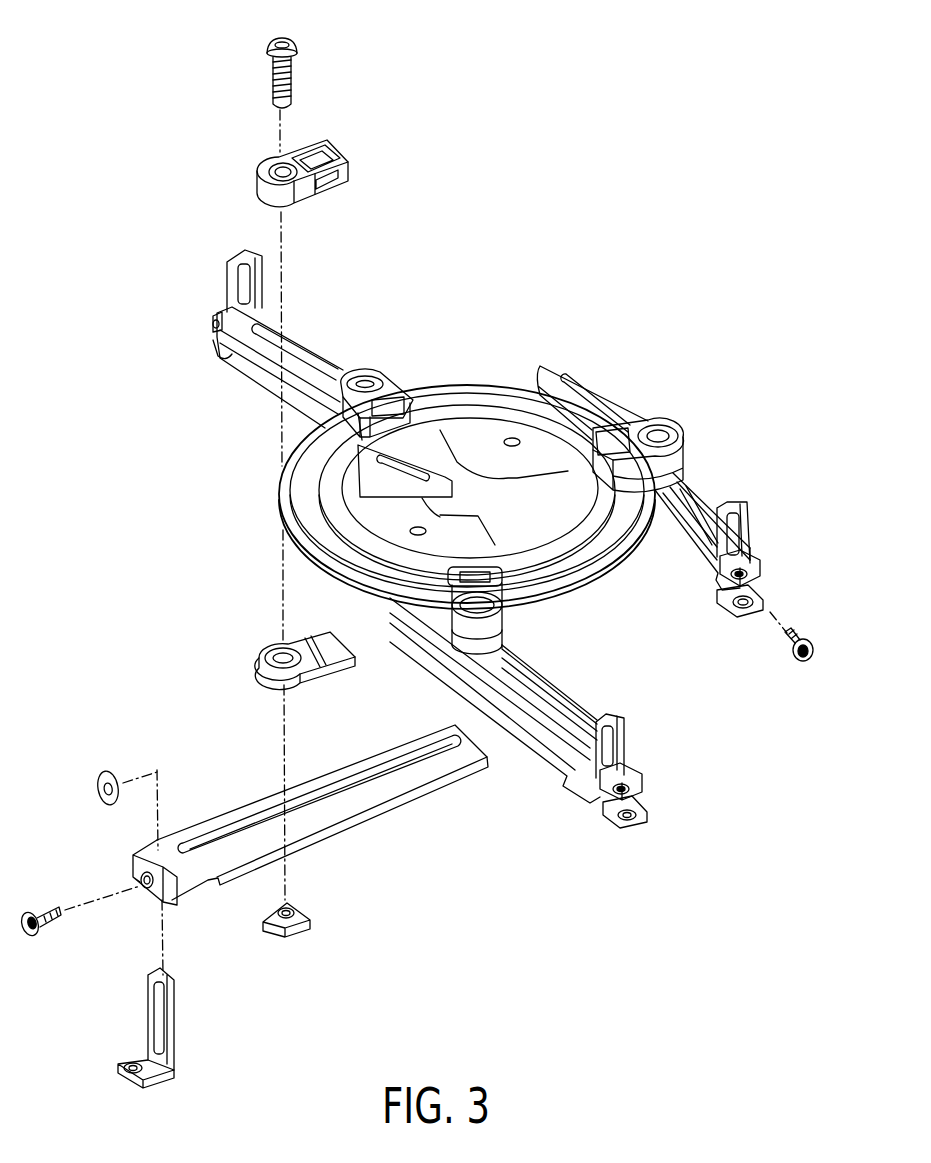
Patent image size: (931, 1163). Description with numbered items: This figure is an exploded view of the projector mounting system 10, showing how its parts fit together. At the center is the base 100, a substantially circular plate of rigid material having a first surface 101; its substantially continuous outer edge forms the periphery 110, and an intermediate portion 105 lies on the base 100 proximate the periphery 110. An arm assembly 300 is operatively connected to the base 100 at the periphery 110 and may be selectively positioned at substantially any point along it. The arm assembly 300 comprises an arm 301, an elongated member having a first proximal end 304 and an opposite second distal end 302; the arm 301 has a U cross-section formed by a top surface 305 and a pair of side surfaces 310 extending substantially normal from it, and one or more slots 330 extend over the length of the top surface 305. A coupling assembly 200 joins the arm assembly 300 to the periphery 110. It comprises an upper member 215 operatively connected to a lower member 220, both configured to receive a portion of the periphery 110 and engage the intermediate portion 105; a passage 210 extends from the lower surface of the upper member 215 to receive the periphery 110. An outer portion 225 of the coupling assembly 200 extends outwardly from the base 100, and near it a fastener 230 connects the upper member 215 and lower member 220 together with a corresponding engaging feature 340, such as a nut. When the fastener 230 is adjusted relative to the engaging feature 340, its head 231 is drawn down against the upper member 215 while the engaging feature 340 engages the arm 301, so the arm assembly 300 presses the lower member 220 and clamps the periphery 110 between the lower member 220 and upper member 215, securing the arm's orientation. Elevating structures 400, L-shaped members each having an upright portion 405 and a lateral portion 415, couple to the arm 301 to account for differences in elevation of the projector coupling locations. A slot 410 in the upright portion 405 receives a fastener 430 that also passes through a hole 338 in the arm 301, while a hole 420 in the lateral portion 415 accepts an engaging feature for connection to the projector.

The mounting system 10 is at (490, 286).
The base 100 is at (463, 440).
The first surface 101 is at (612, 547).
The intermediate portion 105 is at (627, 527).
The periphery 110 is at (508, 393).
The coupling assembly 200 is at (398, 372).
The passage 210 is at (317, 188).
The upper member 215 is at (303, 157).
The lower member 220 is at (315, 642).
The outer portion 225 is at (487, 632).
The fastener 230 is at (282, 40).
The head 231 is at (296, 57).
The arm assembly 300 is at (572, 674).
The arm 301 is at (377, 807).
The second distal end 302 is at (578, 787).
The first proximal end 304 is at (467, 768).
The top surface 305 is at (263, 293).
The side surfaces 310 is at (240, 358).
The slots 330 is at (232, 834).
The hole 338 is at (147, 845).
The engaging feature 340 is at (295, 930).
The elevating structures 400 is at (173, 1003).
The upright portion 405 is at (145, 1017).
The slot 410 is at (615, 740).
The lateral portion 415 is at (152, 1080).
The hole 420 is at (128, 1057).
The fastener 430 is at (792, 658).